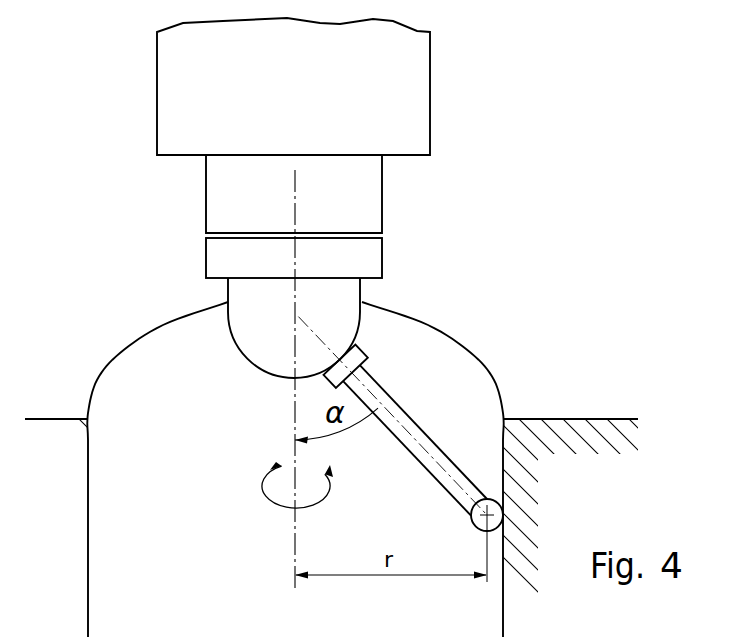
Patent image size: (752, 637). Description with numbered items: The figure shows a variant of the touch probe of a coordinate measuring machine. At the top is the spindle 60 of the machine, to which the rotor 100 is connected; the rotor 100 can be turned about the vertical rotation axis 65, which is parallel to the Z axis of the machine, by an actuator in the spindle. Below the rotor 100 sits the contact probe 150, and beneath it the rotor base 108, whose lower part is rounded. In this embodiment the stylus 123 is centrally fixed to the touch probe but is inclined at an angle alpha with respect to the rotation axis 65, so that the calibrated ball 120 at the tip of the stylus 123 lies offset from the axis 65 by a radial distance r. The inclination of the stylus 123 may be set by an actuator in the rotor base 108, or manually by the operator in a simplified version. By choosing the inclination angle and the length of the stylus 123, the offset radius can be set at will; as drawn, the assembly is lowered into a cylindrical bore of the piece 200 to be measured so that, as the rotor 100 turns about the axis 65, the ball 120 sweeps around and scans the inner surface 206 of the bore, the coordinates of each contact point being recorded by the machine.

The spindle 60 is at (173, 110).
The rotor 100 is at (225, 205).
The contact probe 150 is at (233, 260).
The rotor base 108 is at (268, 345).
The inner surface 206 is at (268, 469).
The piece 200 is at (588, 428).
The stylus 123 is at (402, 415).
The calibrated ball 120 is at (472, 517).
The rotation axis 65 is at (295, 560).